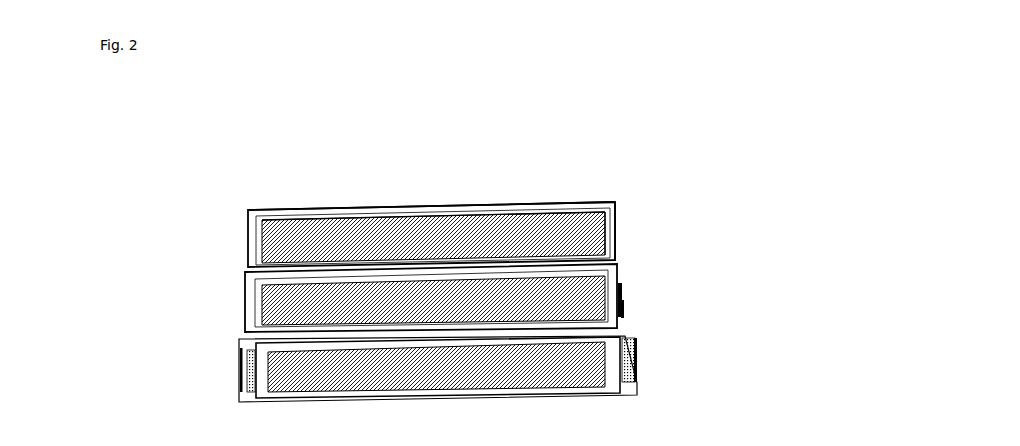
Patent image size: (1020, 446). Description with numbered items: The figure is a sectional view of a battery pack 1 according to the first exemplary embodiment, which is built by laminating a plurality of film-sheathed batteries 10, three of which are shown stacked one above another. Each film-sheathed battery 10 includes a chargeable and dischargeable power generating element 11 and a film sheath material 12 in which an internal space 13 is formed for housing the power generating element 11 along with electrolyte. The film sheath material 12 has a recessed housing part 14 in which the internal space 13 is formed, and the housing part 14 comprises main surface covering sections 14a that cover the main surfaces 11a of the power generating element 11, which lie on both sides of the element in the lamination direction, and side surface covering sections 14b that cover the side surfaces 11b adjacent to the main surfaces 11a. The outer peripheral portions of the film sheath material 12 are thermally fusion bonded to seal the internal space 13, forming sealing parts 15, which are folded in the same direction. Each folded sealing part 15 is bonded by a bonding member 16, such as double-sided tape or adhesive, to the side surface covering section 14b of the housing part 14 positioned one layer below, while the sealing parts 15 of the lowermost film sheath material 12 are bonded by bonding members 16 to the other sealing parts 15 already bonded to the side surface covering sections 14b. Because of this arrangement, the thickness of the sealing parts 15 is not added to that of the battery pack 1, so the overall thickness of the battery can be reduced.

The battery pack 1 is at (422, 106).
The film-sheathed battery 10 is at (178, 195).
The power generating element 11 is at (262, 229).
The main surface 11a is at (400, 208).
The side surface 11b is at (606, 239).
The film sheath material 12 is at (248, 245).
The internal space 13 is at (530, 211).
The housing part 14 is at (685, 170).
The main surface covering section 14a is at (600, 203).
The side surface covering section 14b is at (617, 215).
The sealing part 15 is at (624, 285).
The bonding member 16 is at (626, 313).